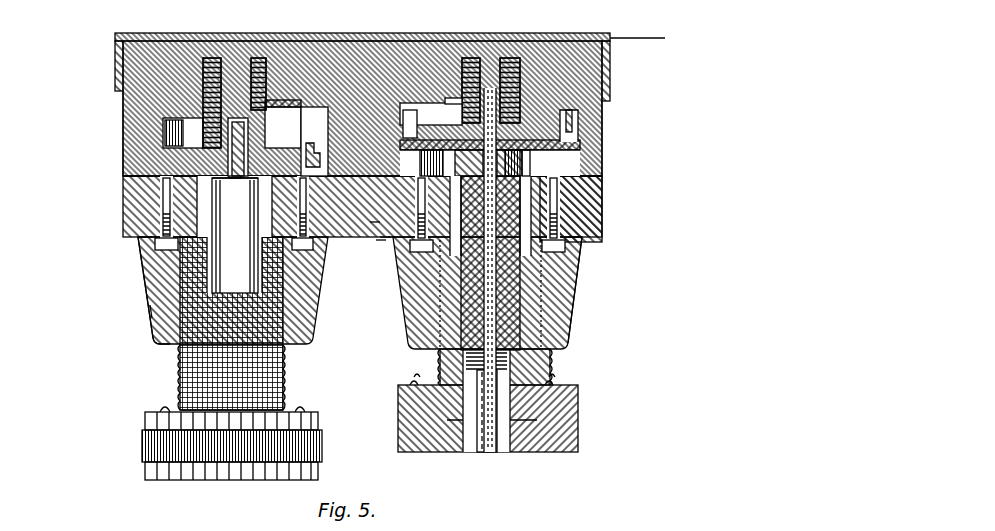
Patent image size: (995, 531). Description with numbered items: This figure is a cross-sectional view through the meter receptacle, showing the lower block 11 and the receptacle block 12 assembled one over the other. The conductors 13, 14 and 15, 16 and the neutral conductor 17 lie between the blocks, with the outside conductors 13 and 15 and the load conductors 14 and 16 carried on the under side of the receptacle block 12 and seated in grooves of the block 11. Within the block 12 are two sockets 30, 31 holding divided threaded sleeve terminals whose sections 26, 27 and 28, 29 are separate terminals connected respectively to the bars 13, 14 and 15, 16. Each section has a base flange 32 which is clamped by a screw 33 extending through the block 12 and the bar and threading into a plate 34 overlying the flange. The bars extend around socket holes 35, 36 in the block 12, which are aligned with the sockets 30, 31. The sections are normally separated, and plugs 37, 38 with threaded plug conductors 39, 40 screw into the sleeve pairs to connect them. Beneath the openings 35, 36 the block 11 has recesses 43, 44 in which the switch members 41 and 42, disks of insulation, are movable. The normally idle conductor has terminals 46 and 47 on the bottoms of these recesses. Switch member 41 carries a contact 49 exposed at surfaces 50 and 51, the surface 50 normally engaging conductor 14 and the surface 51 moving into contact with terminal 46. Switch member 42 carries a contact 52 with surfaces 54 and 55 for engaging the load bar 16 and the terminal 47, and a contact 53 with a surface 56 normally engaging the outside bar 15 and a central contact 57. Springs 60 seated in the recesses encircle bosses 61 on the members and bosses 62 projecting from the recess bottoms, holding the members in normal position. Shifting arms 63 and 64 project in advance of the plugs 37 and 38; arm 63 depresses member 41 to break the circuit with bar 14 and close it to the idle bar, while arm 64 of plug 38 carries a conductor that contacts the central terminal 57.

The block 11 is at (123, 108).
The receptacle block 12 is at (121, 193).
The outside conductor 13 is at (121, 177).
The load conductor 14 is at (368, 41).
The outside conductor 15 is at (601, 185).
The load conductor 16 is at (385, 238).
The neutral conductor 17 is at (386, 78).
The sleeve terminal section 26 is at (152, 339).
The sleeve terminal section 27 is at (315, 310).
The sleeve terminal section 28 is at (573, 318).
The sleeve terminal section 29 is at (415, 339).
The socket 30 is at (146, 295).
The socket 31 is at (573, 298).
The base flange 32 is at (139, 242).
The screw 33 is at (160, 209).
The plate 34 is at (141, 260).
The socket hole 35 is at (121, 223).
The socket hole 36 is at (603, 233).
The plug 37 is at (145, 471).
The plug 38 is at (407, 452).
The plug conductor 39 is at (178, 380).
The plug conductor 40 is at (541, 362).
The switch member 41 is at (121, 145).
The switch member 42 is at (601, 132).
The recess 43 is at (124, 124).
The recess 44 is at (601, 112).
The terminal 46 is at (287, 100).
The terminal 47 is at (427, 108).
The contact 49 is at (247, 178).
The contact surface 50 is at (260, 203).
The contact surface 51 is at (283, 127).
The contact 52 is at (375, 222).
The contact 53 is at (565, 144).
The contact surface 54 is at (381, 240).
The contact surface 55 is at (452, 100).
The contact surface 56 is at (560, 157).
The central contact 57 is at (392, 238).
The spring 60 is at (258, 100).
The boss 61 is at (228, 78).
The boss 62 is at (122, 93).
The shifting arm 63 is at (150, 310).
The shifting arm 64 is at (601, 170).